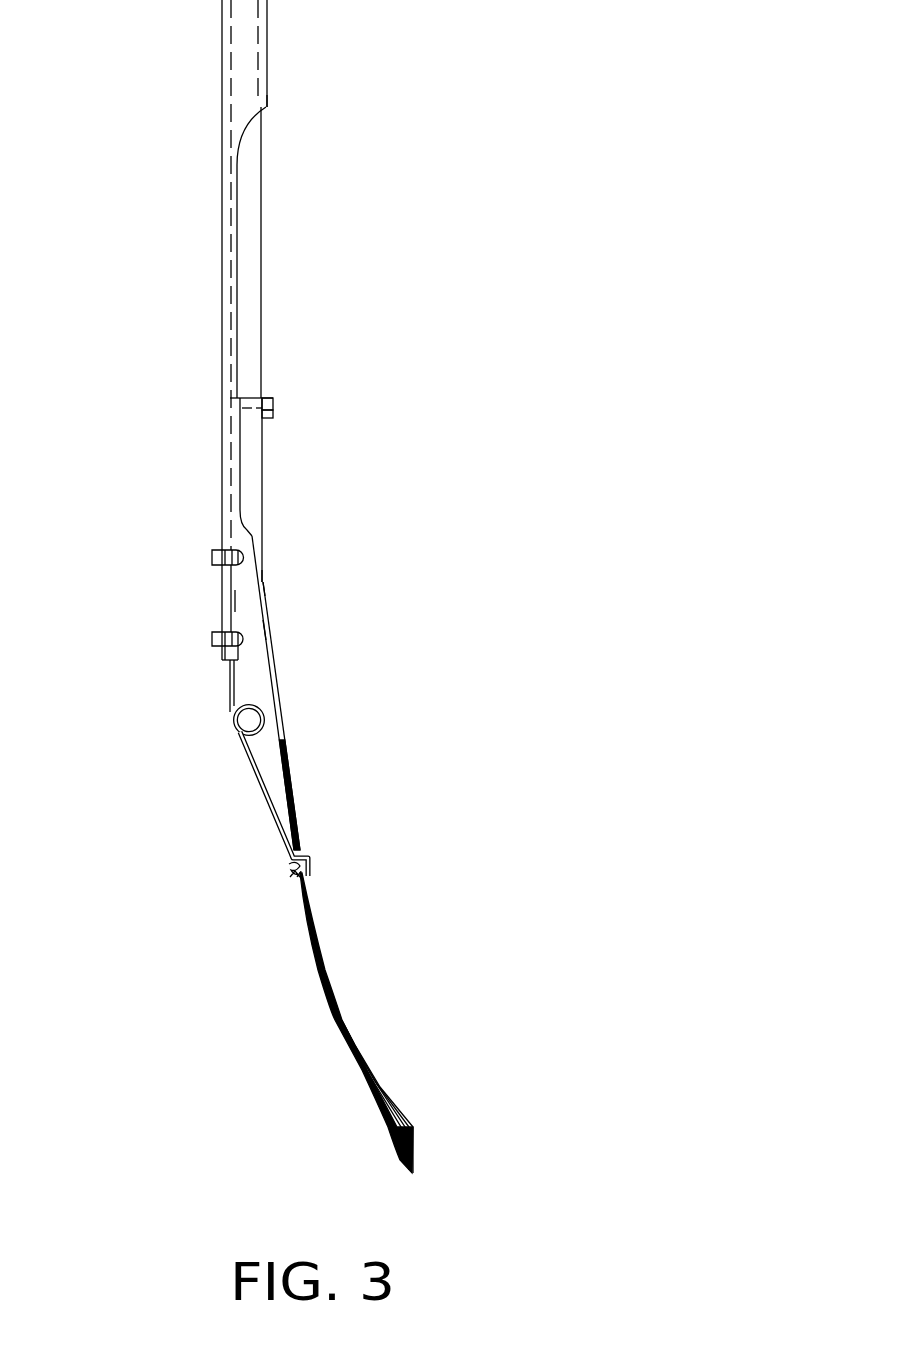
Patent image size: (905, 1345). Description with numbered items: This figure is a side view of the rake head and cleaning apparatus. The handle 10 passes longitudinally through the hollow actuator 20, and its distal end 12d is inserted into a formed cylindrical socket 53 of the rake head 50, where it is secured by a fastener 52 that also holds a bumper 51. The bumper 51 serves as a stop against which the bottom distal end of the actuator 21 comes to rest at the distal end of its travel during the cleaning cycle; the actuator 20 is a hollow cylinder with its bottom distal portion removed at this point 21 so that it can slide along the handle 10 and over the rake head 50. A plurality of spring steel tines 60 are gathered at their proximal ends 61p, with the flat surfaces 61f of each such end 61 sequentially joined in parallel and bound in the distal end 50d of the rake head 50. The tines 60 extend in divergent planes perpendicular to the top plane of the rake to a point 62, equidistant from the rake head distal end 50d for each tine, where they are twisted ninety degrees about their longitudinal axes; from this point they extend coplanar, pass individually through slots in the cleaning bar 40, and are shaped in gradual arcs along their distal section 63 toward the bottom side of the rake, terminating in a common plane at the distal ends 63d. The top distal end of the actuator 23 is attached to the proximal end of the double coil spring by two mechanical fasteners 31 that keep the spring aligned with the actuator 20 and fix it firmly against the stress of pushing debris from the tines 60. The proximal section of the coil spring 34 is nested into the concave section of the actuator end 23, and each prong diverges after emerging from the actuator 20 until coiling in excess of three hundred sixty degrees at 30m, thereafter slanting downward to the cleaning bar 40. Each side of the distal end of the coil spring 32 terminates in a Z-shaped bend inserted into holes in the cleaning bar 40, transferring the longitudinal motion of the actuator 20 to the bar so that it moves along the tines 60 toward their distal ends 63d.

The hollow actuator 20 is at (162, 330).
The bottom distal end of the actuator 21 is at (358, 157).
The handle 10 is at (328, 252).
The cylindrical socket 53 is at (327, 349).
The distal end of the handle 12d is at (362, 367).
The fastener 52 is at (340, 410).
The bumper 51 is at (340, 444).
The rake head 50 is at (366, 490).
The distal end of the rake head 50d is at (367, 552).
The proximal ends of the tines 61p is at (366, 603).
The flat surfaces of the tine proximal ends 61f is at (353, 647).
The tine proximal end 61 is at (349, 693).
The twist point of the tines 62 is at (370, 795).
The spring steel tines 60 is at (407, 1023).
The distal section of the tines 63 is at (447, 1072).
The distal ends of the tines 63d is at (495, 1138).
The mechanical fasteners 31 is at (151, 598).
The top distal end of the actuator 23 is at (150, 666).
The proximal section of the coil spring 34 is at (157, 687).
The coil of the coil spring 30m is at (161, 734).
The distal end of the coil spring 32 is at (195, 804).
The cleaning bar 40 is at (205, 876).